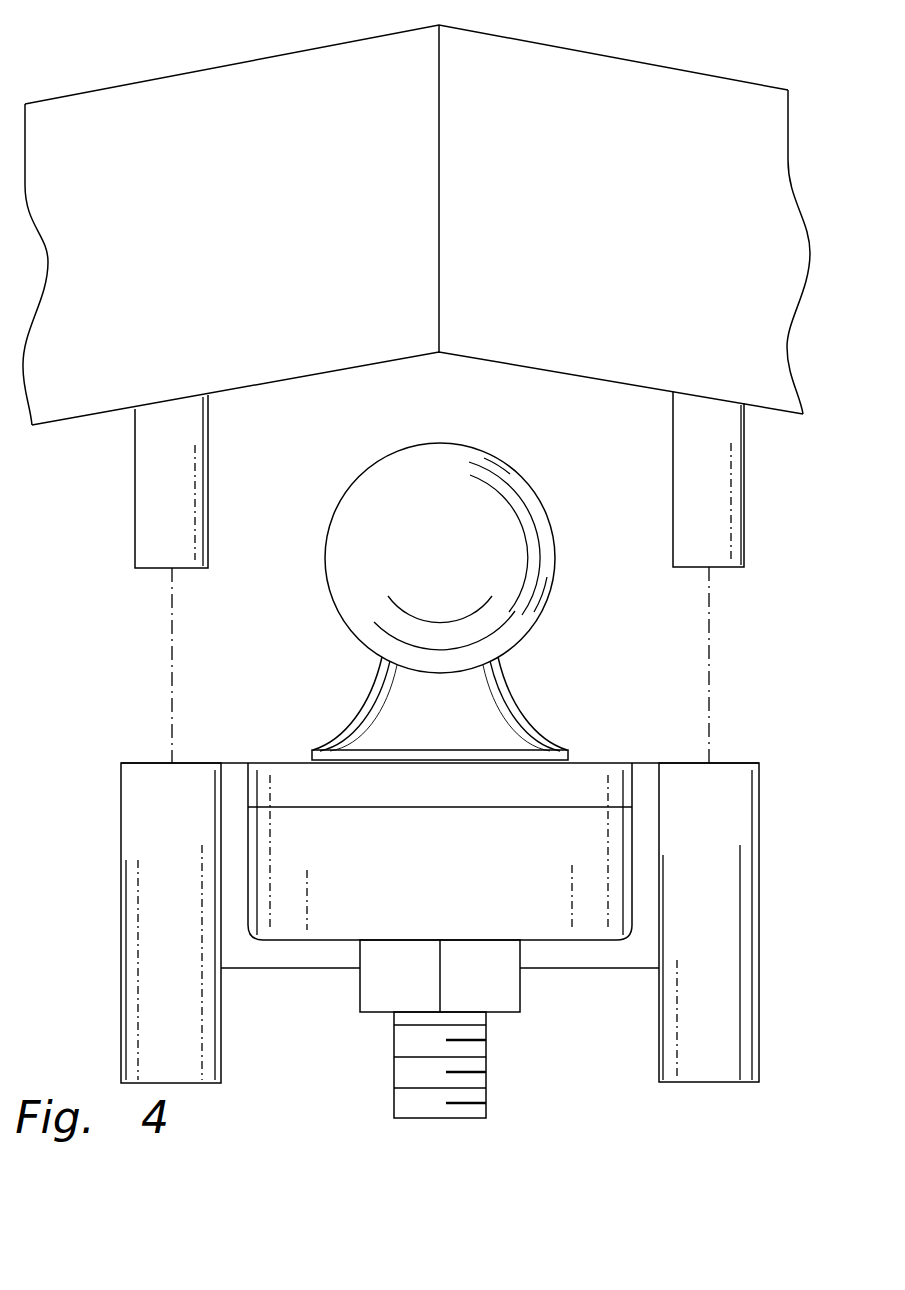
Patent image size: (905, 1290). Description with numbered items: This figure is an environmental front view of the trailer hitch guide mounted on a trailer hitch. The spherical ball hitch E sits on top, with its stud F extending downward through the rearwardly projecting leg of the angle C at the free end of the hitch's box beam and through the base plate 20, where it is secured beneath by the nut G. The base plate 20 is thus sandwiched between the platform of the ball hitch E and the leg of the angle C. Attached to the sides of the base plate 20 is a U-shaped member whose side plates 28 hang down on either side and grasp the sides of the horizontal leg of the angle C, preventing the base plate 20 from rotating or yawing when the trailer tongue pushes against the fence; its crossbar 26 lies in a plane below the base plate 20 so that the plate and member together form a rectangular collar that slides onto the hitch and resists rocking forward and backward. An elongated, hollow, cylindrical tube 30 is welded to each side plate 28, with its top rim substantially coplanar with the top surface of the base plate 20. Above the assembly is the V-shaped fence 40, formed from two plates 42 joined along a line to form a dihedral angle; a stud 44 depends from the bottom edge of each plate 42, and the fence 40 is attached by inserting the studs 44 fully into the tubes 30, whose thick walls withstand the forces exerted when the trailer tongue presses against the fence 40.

The fence 40 is at (416, 217).
The plate 42 is at (133, 80).
The stud 44 is at (135, 445).
The spherical ball hitch E is at (513, 563).
The base plate 20 is at (298, 778).
The side plate 28 is at (238, 905).
The crossbar 26 is at (547, 957).
The cylindrical tube 30 is at (142, 980).
The angle C is at (350, 928).
The nut G is at (485, 998).
The stud F is at (433, 1088).